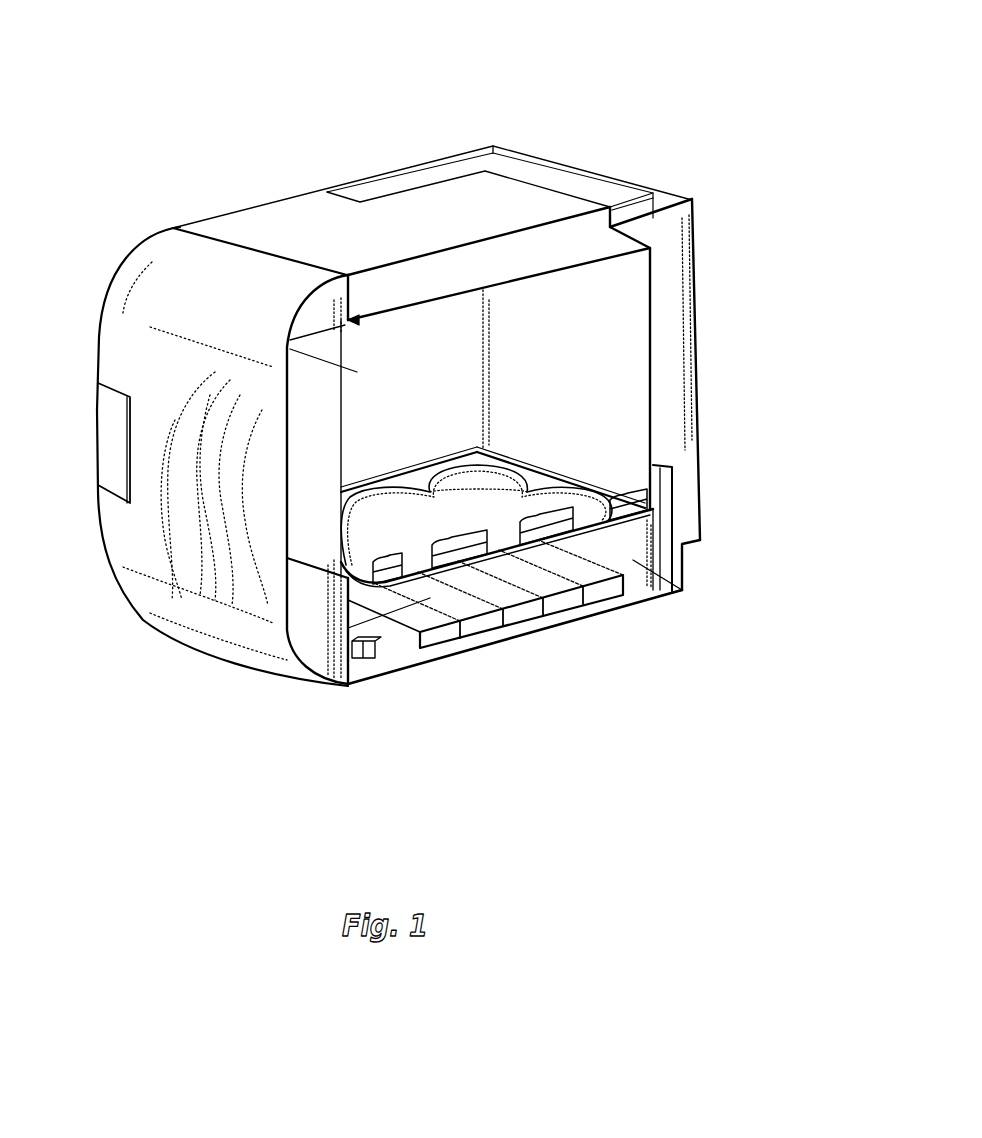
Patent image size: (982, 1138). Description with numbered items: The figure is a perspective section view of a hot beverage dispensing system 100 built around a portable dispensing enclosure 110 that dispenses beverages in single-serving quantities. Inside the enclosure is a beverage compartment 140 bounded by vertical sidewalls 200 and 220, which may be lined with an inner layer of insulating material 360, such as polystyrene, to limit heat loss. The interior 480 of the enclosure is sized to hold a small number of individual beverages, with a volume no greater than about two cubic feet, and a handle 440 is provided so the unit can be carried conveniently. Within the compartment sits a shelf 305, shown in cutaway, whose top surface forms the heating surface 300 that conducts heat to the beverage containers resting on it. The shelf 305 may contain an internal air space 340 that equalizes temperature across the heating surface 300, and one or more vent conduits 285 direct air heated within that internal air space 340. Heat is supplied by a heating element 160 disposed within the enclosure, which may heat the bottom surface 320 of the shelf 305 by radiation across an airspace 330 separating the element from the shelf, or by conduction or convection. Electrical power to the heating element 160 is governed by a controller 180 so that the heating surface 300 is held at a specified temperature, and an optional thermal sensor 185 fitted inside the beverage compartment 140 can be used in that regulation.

The beverage dispensing system 100 is at (579, 83).
The dispensing enclosure 110 is at (255, 217).
The beverage compartment 140 is at (617, 312).
The heating element 160 is at (413, 640).
The controller 180 is at (668, 495).
The thermal sensor 185 is at (358, 658).
The vertical sidewall 200 is at (433, 362).
The vertical sidewall 220 is at (571, 337).
The vent conduit 285 is at (683, 563).
The heating surface 300 is at (537, 483).
The shelf 305 is at (527, 501).
The bottom surface 320 is at (593, 540).
The airspace 330 is at (683, 585).
The internal air space 340 is at (578, 508).
The insulating material 360 is at (495, 265).
The handle 440 is at (613, 185).
The interior 480 is at (292, 340).